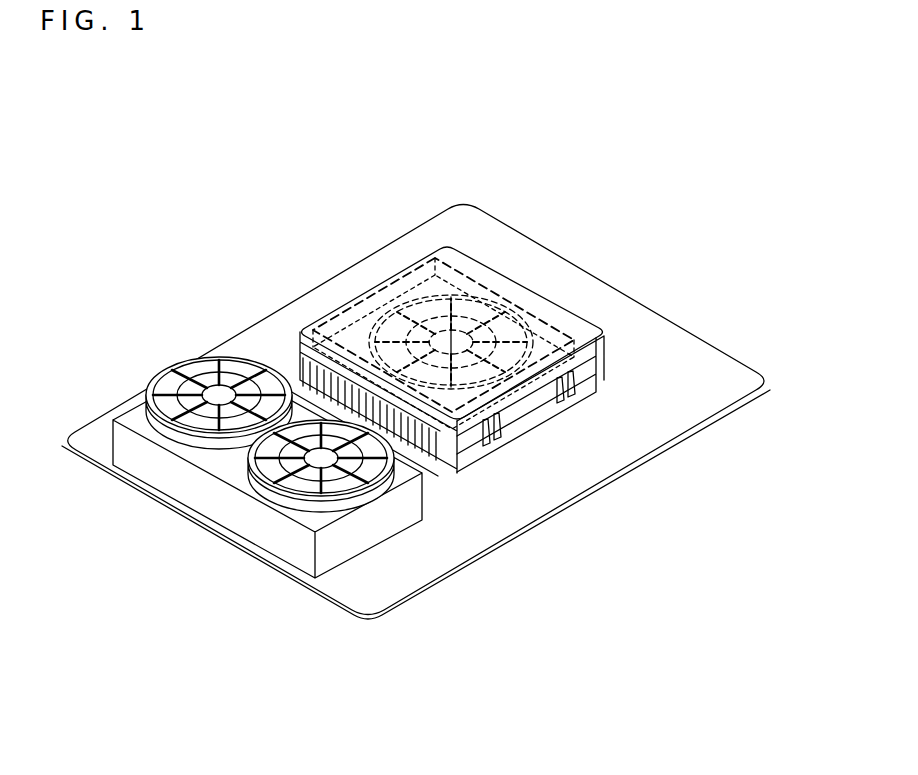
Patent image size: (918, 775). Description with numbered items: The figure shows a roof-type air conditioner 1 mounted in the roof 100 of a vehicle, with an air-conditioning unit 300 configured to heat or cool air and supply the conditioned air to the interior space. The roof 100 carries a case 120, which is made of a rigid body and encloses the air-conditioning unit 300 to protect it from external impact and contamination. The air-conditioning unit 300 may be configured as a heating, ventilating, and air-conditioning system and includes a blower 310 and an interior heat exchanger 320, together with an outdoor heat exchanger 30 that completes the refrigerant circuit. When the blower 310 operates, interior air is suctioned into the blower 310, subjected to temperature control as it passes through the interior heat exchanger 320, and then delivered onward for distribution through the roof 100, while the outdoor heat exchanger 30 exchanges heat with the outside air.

The roof-type air conditioner 1 is at (243, 271).
The roof 100 is at (582, 477).
The case 120 is at (464, 262).
The air-conditioning unit 300 is at (544, 354).
The blower 310 is at (517, 309).
The interior heat exchanger 320 is at (583, 377).
The outdoor heat exchanger 30 is at (343, 545).